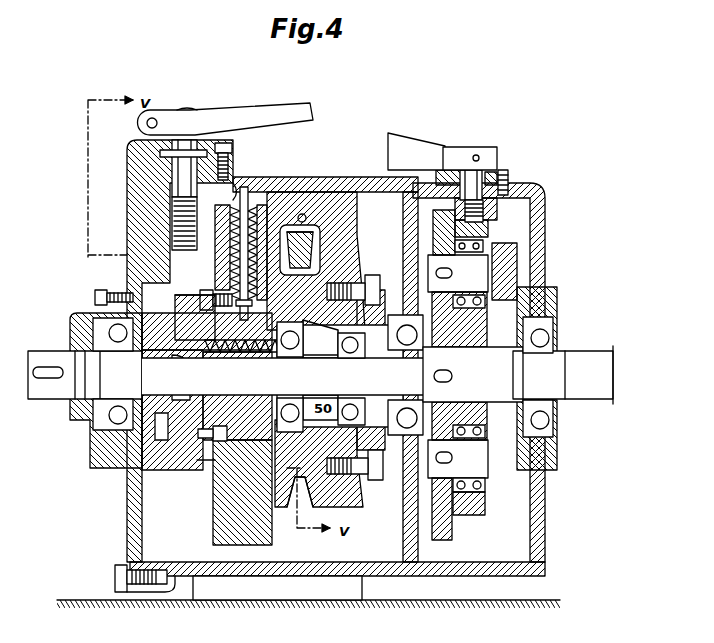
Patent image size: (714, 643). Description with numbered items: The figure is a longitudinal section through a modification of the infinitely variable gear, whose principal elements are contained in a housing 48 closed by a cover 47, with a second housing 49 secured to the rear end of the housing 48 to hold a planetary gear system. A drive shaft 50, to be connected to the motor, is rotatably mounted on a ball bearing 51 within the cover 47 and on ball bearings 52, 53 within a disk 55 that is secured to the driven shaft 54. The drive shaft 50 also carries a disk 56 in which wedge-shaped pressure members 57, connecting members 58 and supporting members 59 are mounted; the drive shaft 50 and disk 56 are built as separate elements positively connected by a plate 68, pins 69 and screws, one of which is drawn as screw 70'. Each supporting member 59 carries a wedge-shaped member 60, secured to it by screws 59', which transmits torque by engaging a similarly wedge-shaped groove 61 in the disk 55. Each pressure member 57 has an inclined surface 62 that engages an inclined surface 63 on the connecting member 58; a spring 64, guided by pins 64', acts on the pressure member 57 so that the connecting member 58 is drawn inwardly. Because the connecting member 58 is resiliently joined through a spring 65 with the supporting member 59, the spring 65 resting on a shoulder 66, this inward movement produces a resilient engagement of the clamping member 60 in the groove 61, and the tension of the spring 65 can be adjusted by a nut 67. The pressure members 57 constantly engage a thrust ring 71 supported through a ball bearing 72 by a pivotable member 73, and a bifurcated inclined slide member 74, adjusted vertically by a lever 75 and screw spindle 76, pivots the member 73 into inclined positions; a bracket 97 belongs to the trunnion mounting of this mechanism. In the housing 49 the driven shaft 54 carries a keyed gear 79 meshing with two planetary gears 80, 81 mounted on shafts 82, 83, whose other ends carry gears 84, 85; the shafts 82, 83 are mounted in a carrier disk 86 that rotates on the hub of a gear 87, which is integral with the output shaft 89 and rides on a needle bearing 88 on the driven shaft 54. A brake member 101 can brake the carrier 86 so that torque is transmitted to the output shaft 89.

The cover 47 is at (126, 530).
The housing 48 is at (366, 570).
The second housing 49 is at (478, 570).
The drive shaft 50 is at (50, 385).
The ball bearing 51 is at (115, 424).
The ball bearing 52 is at (323, 398).
The ball bearing 53 is at (350, 404).
The driven shaft 54 is at (495, 372).
The disk 55 is at (340, 250).
The disk 56 is at (222, 240).
The wedge-shaped pressure member 57 is at (200, 320).
The connecting member 58 is at (285, 213).
The supporting member 59 is at (341, 315).
The screws 59' is at (323, 208).
The wedge-shaped member 60 is at (305, 243).
The wedge-shaped groove 61 is at (292, 505).
The inclined surface 62 is at (220, 345).
The inclined surface 63 is at (250, 352).
The spring 64 is at (237, 396).
The pins 64' is at (253, 376).
The spring 65 is at (231, 212).
The shoulder 66 is at (213, 296).
The nut 67 is at (247, 228).
The plate 68 is at (200, 462).
The pins 69 is at (205, 436).
The fork 70' is at (192, 300).
The thrust ring 71 is at (137, 292).
The ball bearing 72 is at (125, 357).
The pivotable member 73 is at (100, 310).
The inclined slide member 74 is at (152, 236).
The lever 75 is at (290, 112).
The screw spindle 76 is at (175, 171).
The gear 79 is at (443, 350).
The planetary gear 80 is at (438, 226).
The planetary gear 81 is at (440, 535).
The shaft 82 is at (482, 266).
The shaft 83 is at (470, 485).
The gear 84 is at (510, 248).
The gear 85 is at (500, 515).
The carrier disk 86 is at (480, 232).
The gear 87 is at (535, 295).
The needle bearing 88 is at (480, 347).
The output shaft 89 is at (580, 365).
The bracket 97 is at (163, 410).
The brake member 101 is at (428, 148).